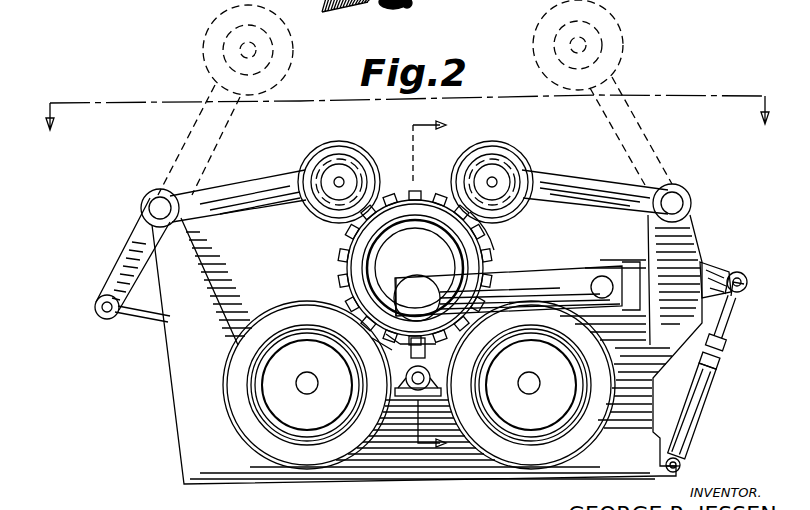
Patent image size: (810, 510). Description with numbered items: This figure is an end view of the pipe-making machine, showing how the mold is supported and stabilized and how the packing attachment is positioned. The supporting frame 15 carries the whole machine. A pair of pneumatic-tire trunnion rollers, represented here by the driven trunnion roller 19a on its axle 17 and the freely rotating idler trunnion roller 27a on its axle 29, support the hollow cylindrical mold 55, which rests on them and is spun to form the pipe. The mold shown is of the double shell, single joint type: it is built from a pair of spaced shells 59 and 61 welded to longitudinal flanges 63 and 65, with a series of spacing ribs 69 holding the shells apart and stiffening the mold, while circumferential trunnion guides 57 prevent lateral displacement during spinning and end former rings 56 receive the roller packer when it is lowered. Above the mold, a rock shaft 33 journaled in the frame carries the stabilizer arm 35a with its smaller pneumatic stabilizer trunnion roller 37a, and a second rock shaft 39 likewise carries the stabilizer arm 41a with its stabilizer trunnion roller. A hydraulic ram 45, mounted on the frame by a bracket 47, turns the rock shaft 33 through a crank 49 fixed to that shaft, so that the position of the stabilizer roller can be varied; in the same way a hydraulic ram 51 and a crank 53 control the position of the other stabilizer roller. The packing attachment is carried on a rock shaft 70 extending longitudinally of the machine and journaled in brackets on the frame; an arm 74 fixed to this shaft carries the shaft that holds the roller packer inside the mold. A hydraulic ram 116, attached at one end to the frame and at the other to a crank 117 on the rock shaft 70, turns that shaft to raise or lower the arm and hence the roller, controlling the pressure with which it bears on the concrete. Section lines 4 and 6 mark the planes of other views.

The section line 4- 4 is at (438, 287).
The section line 6- 6 is at (404, 101).
The supporting frame 15 is at (190, 400).
The axle 17 is at (529, 388).
The trunnion roller 19a is at (516, 458).
The idler trunnion roller 27a is at (310, 462).
The axle 29 is at (306, 388).
The rock shaft 33 is at (143, 202).
The stabilizer arm 35a is at (262, 190).
The stabilizer trunnion roller 37a is at (348, 152).
The rock shaft 39 is at (690, 198).
The stabilizer arm 41a is at (556, 184).
The hydraulic ram 45 is at (396, 360).
The bracket 47 is at (416, 390).
The crank 49 is at (122, 264).
The hydraulic ram 51 is at (446, 345).
The crank 53 is at (716, 262).
The hollow cylindrical mold 55 is at (345, 250).
The end former ring 56 is at (420, 215).
The circumferential trunnion guide 57 is at (406, 200).
The shell 59 is at (350, 266).
The shell 61 is at (348, 283).
The longitudinal flange 63 is at (378, 344).
The longitudinal flange 65 is at (417, 298).
The spacing rib 69 is at (484, 238).
The rock shaft 70 is at (600, 276).
The arm 74 is at (510, 282).
The hydraulic ram 116 is at (710, 382).
The crank 117 is at (746, 274).